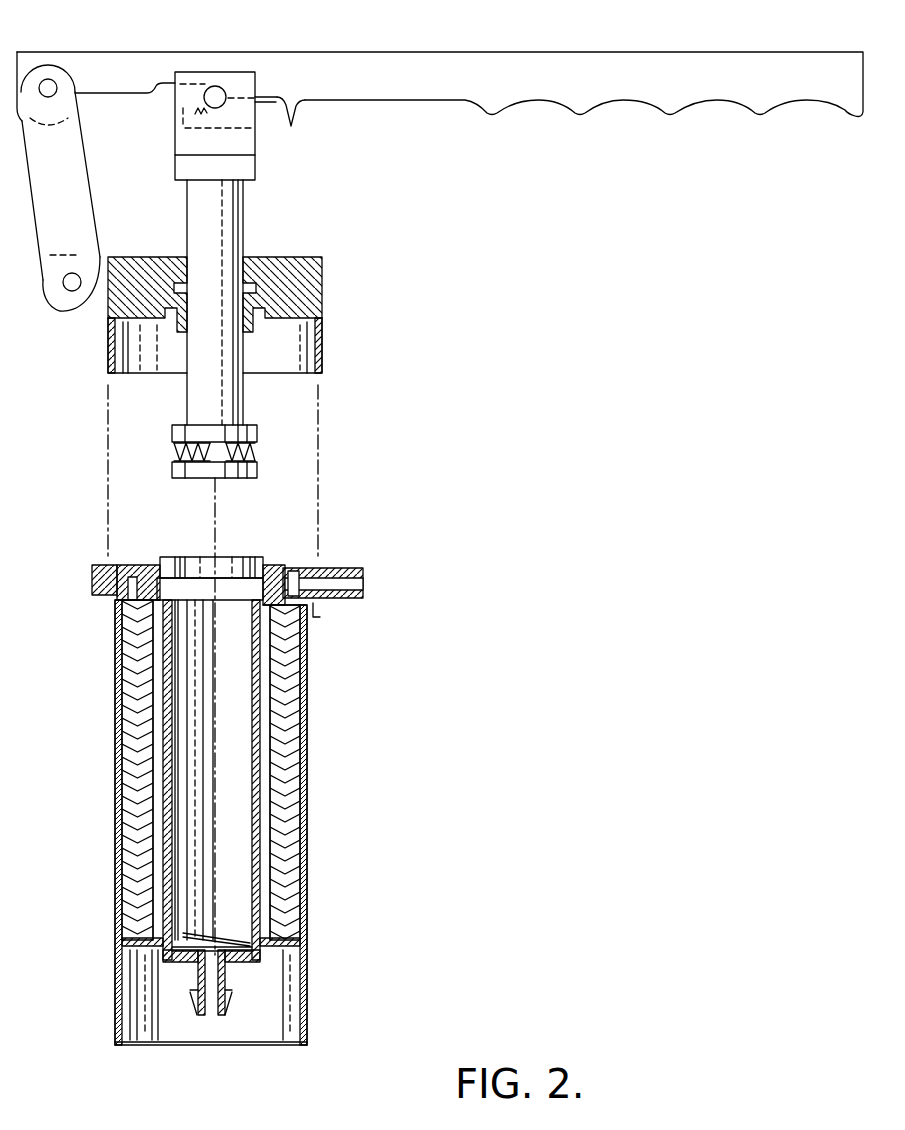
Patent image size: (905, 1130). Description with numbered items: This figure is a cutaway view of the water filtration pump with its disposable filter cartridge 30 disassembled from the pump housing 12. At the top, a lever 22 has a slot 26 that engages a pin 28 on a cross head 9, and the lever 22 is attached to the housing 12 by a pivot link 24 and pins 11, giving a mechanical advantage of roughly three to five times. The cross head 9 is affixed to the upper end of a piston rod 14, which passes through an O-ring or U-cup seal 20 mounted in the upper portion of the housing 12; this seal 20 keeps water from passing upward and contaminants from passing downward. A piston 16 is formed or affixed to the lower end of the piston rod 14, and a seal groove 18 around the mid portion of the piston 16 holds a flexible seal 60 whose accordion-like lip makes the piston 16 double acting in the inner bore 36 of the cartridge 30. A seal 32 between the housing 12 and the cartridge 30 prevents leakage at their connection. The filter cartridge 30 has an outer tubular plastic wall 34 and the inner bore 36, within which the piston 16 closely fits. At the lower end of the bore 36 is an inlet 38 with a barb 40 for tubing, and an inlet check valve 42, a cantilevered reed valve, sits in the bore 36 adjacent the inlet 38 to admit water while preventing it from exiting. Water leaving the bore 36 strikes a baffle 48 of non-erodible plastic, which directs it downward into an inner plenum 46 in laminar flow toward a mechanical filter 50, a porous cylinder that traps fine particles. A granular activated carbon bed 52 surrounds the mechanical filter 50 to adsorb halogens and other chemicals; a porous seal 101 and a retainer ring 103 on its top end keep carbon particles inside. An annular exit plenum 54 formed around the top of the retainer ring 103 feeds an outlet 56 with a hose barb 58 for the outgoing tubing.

The cross head 9 is at (190, 144).
The pins 11 is at (53, 86).
The pump housing 12 is at (267, 289).
The piston rod 14 is at (243, 218).
The piston 16 is at (235, 485).
The seal groove 18 is at (206, 445).
The O-ring or U-cup seal 20 is at (250, 262).
The lever 22 is at (633, 60).
The pivot link 24 is at (68, 211).
The slot 26 is at (296, 120).
The pin 28 is at (203, 97).
The filter cartridge 30 is at (215, 845).
The seal 32 is at (233, 562).
The outer tubular plastic wall 34 is at (113, 990).
The inner bore 36 is at (213, 737).
The inlet 38 is at (212, 1020).
The barb 40 is at (197, 988).
The inlet check valve 42 is at (213, 938).
The inner plenum 46 is at (157, 662).
The baffle 48 is at (190, 594).
The mechanical filter 50 is at (275, 823).
The granular activated carbon bed 52 is at (288, 851).
The exit plenum 54 is at (372, 580).
The outlet 56 is at (350, 595).
The hose barb 58 is at (363, 582).
The flexible seal 60 is at (173, 451).
The porous seal 101 is at (118, 636).
The retainer ring 103 is at (120, 576).